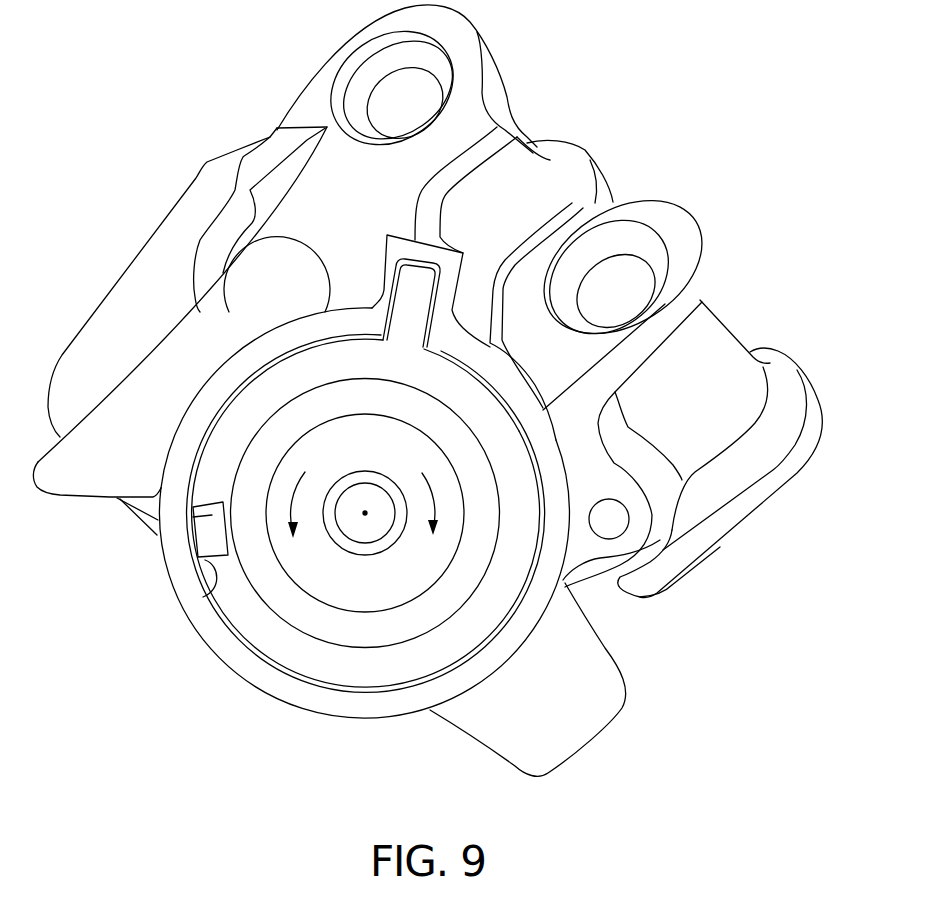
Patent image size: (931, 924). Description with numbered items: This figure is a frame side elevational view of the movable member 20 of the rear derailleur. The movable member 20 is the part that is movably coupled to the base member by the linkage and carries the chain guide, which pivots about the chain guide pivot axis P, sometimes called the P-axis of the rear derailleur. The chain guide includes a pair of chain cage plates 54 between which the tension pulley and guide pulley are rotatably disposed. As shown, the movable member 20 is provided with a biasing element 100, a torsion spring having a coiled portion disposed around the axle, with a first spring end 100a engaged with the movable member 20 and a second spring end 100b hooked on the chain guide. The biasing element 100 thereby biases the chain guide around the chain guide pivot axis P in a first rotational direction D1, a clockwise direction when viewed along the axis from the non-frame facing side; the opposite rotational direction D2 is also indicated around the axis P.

The movable member 20 is at (752, 222).
The chain cage plates 54 is at (422, 555).
The biasing element 100 is at (357, 476).
The first spring end 100a is at (393, 288).
The second spring end 100b is at (212, 597).
The chain guide pivot axis P is at (365, 513).
The first rotational direction D1 is at (432, 490).
The second rotation direction D2 is at (299, 483).